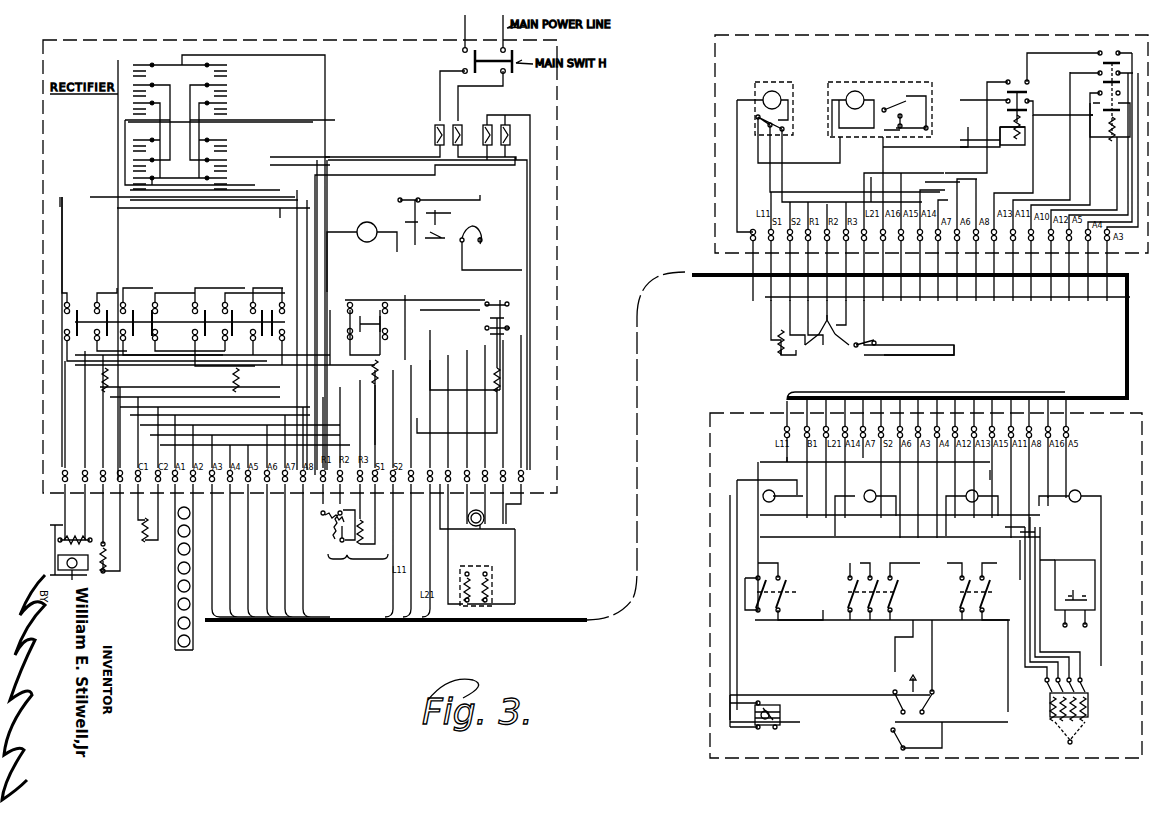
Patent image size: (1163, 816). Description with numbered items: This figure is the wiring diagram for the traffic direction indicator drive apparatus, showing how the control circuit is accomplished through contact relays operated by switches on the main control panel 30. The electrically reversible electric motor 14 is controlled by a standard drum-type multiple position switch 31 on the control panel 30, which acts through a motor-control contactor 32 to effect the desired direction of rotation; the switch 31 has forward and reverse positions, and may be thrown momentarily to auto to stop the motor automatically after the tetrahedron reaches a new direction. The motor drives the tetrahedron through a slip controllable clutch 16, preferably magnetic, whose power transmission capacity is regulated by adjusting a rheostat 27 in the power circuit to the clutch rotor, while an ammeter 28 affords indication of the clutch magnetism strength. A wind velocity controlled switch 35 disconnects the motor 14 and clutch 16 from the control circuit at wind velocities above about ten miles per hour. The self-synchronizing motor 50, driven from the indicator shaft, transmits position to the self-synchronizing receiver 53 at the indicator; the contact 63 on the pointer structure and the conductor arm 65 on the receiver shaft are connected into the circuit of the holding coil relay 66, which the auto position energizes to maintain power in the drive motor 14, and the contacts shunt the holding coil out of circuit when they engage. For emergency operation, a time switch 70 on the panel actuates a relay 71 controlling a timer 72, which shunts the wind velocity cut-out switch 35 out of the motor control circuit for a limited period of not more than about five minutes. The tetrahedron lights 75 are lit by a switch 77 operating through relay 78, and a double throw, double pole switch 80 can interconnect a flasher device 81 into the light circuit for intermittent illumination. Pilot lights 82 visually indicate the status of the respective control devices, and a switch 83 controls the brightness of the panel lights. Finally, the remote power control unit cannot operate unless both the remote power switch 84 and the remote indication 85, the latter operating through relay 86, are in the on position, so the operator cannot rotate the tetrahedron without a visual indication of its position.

The electric motor 14 is at (50, 555).
The slip controllable clutch 16 is at (151, 548).
The rheostat 27 is at (485, 218).
The ammeter 28 is at (366, 242).
The control panel 30 is at (704, 622).
The drum-type multiple position switch 31 is at (889, 734).
The motor-control contactor 32 is at (68, 275).
The wind velocity controlled switch 35 is at (480, 538).
The self-synchronizing motor 50 is at (340, 552).
The self-synchronizing receiver 53 is at (858, 353).
The contact 63 is at (874, 343).
The conductor arm 65 is at (874, 333).
The holding coil relay 66 is at (1112, 42).
The time switch 70 is at (1091, 580).
The relay 71 is at (1020, 82).
The timer 72 is at (890, 82).
The lights 75 is at (175, 600).
The switch 77 is at (785, 610).
The relay 78 is at (378, 338).
The double throw, double pole switch 80 is at (783, 715).
The flasher device 81 is at (758, 104).
The pilot lights 82 is at (769, 488).
The switch 83 is at (1090, 726).
The remote power switch 84 is at (985, 610).
The remote indication 85 is at (853, 616).
The relay 86 is at (492, 328).